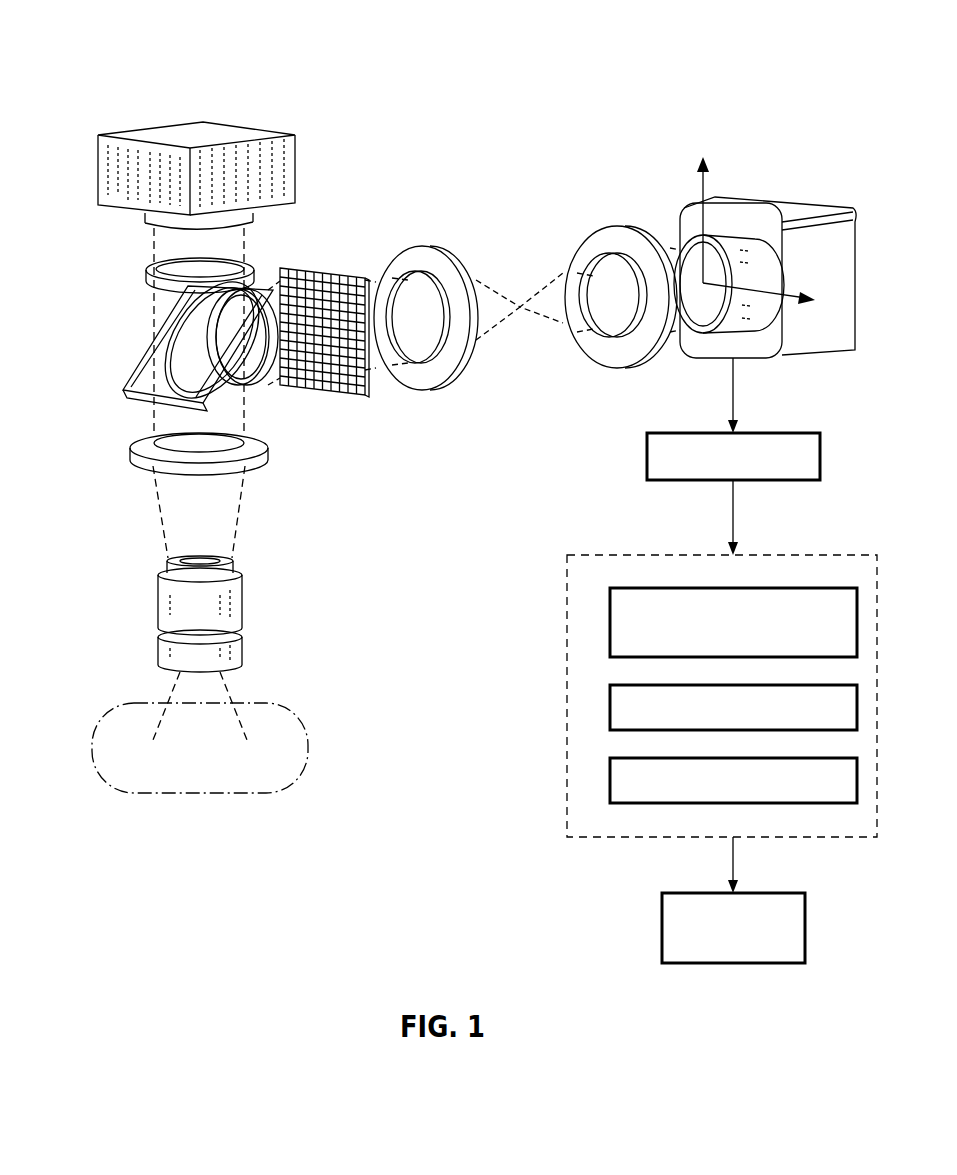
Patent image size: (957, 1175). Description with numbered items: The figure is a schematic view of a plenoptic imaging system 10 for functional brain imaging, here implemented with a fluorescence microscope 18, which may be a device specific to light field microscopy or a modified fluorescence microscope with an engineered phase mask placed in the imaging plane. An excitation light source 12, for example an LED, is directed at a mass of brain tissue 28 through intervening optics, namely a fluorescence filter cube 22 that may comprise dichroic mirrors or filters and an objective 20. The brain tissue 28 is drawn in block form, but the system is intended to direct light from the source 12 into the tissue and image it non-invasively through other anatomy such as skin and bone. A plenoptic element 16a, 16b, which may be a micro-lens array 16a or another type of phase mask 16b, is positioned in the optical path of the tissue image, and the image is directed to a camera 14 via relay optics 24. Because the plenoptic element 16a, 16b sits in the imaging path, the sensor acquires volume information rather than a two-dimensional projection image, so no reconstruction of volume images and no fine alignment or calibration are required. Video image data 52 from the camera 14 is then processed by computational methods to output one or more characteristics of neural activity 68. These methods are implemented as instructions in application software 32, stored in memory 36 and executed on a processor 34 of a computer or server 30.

The plenoptic imaging system 10 is at (134, 46).
The excitation light source 12 is at (296, 156).
The camera 14 is at (776, 205).
The micro-lens array 16a is at (289, 266).
The phase mask 16b is at (324, 332).
The fluorescence microscope 18 is at (472, 130).
The objective 20 is at (238, 608).
The fluorescence filter cube 22 is at (126, 394).
The relay optics 24 is at (420, 247).
The brain tissue 28 is at (126, 796).
The computer or server 30 is at (580, 842).
The application software 32 is at (626, 588).
The processor 34 is at (626, 685).
The memory 36 is at (626, 758).
The video image data 52 is at (647, 456).
The neural activity 68 is at (662, 918).